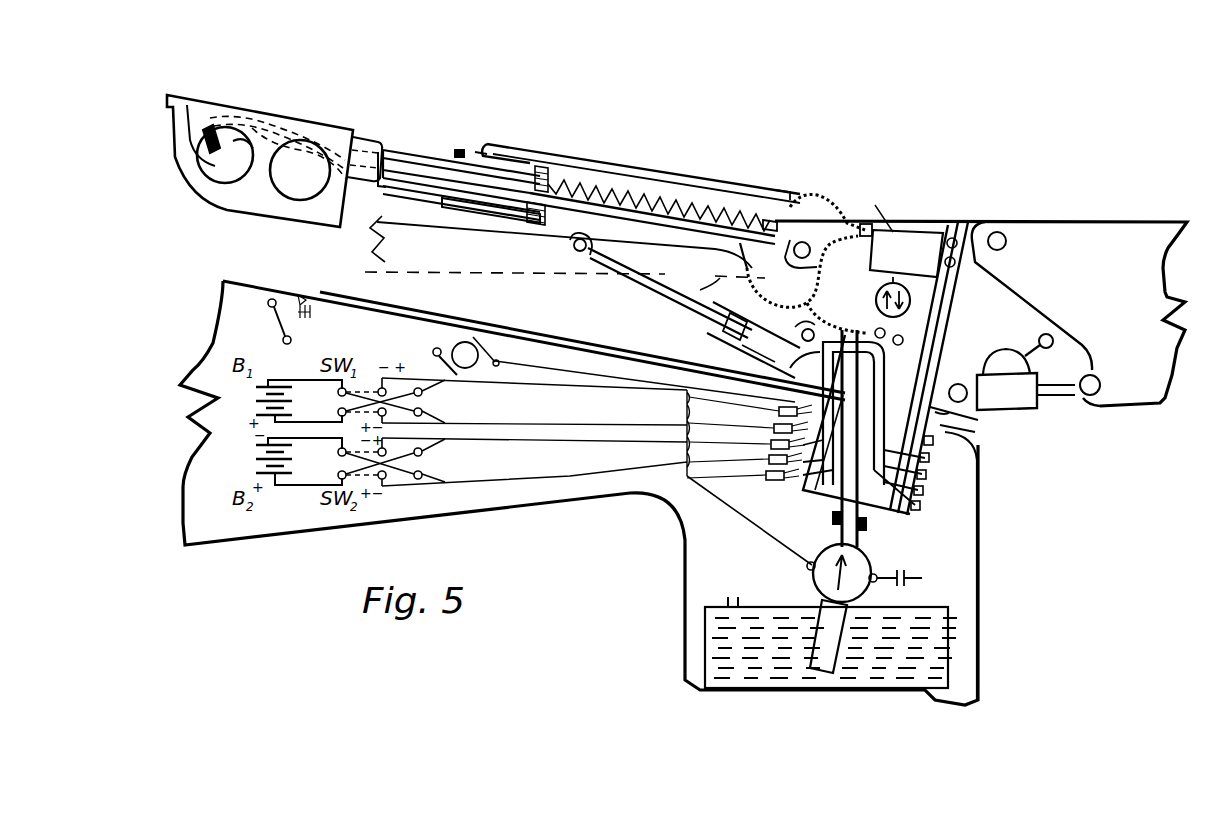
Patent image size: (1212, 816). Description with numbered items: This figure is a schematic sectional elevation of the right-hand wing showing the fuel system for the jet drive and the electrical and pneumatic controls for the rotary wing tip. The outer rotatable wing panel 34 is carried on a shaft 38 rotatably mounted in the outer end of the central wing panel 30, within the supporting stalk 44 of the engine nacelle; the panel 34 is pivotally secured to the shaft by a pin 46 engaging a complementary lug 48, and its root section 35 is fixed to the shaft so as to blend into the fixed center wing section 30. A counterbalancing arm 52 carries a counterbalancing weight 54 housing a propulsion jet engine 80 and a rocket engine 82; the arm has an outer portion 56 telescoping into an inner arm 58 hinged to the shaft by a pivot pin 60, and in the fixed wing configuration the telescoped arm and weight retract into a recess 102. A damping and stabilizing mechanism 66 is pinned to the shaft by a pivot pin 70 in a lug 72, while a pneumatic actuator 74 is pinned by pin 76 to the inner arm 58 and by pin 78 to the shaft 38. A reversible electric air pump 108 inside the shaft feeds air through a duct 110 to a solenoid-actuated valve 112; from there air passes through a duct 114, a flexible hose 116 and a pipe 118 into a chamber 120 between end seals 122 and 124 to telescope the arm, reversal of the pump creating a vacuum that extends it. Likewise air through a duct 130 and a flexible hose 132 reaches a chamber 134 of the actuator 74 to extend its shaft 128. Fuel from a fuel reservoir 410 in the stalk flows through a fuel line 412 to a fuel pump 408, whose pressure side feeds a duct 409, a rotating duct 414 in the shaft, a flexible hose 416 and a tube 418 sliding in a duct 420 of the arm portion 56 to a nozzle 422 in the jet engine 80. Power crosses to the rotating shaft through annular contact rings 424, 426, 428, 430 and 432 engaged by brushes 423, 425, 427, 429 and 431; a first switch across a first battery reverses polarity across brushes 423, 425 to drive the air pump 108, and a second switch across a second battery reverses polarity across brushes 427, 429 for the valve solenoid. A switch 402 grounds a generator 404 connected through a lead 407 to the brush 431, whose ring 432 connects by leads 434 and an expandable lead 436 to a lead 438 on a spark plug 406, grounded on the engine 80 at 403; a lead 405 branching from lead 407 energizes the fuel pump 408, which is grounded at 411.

The central wing panel 30 is at (546, 496).
The outer rotatable wing panel 34 is at (1135, 222).
The root section 35 is at (360, 270).
The shaft 38 is at (950, 330).
The supporting stalk 44 is at (966, 535).
The pin 46 is at (1002, 238).
The lug 48 is at (975, 225).
The counterbalancing arm 52 is at (545, 125).
The counterbalancing weight 54 is at (262, 110).
The outer portion 56 is at (417, 162).
The inner arm 58 is at (485, 153).
The pivot pin 60 is at (800, 240).
The damping and stabilizing mechanism 66 is at (1030, 405).
The pivot pin 70 is at (960, 384).
The lug 72 is at (956, 419).
The pneumatic actuator 74 is at (745, 346).
The pin 76 is at (574, 258).
The pin 78 is at (805, 337).
The propulsion jet engine 80 is at (203, 174).
The rocket engine 82 is at (300, 143).
The recess 102 is at (500, 280).
The reversible electric air pump 108 is at (913, 300).
The duct 110 is at (890, 283).
The solenoid-actuated valve 112 is at (940, 225).
The duct 114 is at (866, 222).
The flexible hose 116 is at (822, 194).
The pipe 118 is at (608, 172).
The chamber 120 is at (472, 205).
The end seal 122 is at (545, 172).
The end seal 124 is at (466, 150).
The shaft 128 is at (695, 310).
The duct 130 is at (898, 230).
The flexible hose 132 is at (812, 292).
The chamber 134 is at (775, 358).
The switch 402 is at (282, 333).
The ground 403 is at (208, 130).
The generator 404 is at (440, 350).
The lead 405 is at (768, 540).
The spark plug 406 is at (220, 145).
The lead 407 is at (510, 365).
The fuel pump 408 is at (868, 565).
The duct 409 is at (840, 535).
The fuel reservoir 410 is at (766, 606).
The ground 411 is at (918, 578).
The fuel line 412 is at (860, 612).
The rotating duct 414 is at (868, 518).
The flexible hose 416 is at (696, 278).
The tube 418 is at (562, 203).
The duct 420 is at (438, 180).
The nozzle 422 is at (247, 153).
The brush 423 is at (779, 408).
The annular contact ring 424 is at (933, 441).
The brush 425 is at (774, 426).
The annular contact ring 426 is at (929, 458).
The brush 427 is at (771, 444).
The annular contact ring 428 is at (926, 475).
The brush 429 is at (769, 459).
The annular contact ring 430 is at (923, 491).
The brush 431 is at (766, 477).
The annular contact ring 432 is at (920, 506).
The leads 434 is at (857, 404).
The expandable lead 436 is at (702, 215).
The lead 438 is at (388, 150).